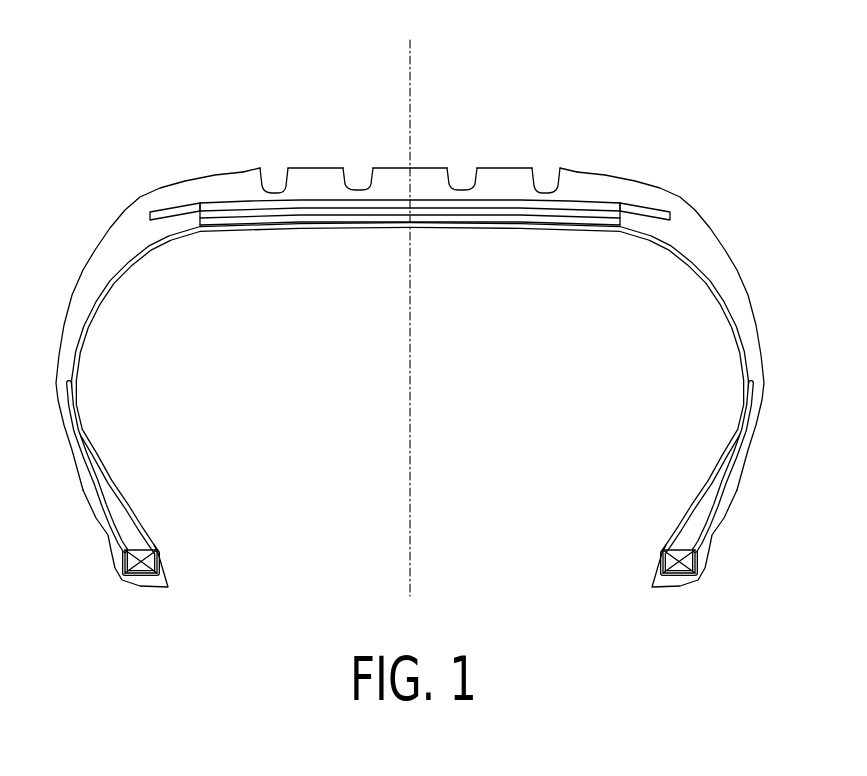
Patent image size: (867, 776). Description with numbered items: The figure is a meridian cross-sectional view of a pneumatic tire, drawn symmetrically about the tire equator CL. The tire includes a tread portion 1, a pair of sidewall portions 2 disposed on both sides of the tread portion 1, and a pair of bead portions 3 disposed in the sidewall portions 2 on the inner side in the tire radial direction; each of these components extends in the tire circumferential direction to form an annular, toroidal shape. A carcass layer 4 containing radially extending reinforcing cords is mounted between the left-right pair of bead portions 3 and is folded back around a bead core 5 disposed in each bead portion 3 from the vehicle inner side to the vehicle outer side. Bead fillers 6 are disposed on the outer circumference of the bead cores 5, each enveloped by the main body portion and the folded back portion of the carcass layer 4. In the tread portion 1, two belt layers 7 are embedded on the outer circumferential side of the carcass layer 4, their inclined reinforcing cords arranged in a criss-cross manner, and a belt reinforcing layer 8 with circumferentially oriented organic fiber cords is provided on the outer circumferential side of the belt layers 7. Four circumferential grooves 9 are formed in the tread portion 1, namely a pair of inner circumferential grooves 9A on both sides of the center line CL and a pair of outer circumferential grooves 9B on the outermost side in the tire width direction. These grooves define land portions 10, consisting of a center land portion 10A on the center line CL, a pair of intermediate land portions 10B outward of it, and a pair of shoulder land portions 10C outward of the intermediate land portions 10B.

The tread portion 1 is at (423, 158).
The sidewall portions 2 is at (62, 325).
The bead portions 3 is at (107, 552).
The carcass layer 4 is at (108, 270).
The bead core 5 is at (160, 557).
The bead fillers 6 is at (132, 528).
The belt layers 7 is at (553, 216).
The belt reinforcing layer 8 is at (203, 203).
The circumferential grooves 9 is at (412, 148).
The inner circumferential grooves 9A is at (363, 178).
The outer circumferential grooves 9B is at (278, 178).
The land portions 10 is at (418, 97).
The center land portion 10A is at (388, 168).
The intermediate land portions 10B is at (322, 168).
The shoulder land portions 10C is at (238, 172).